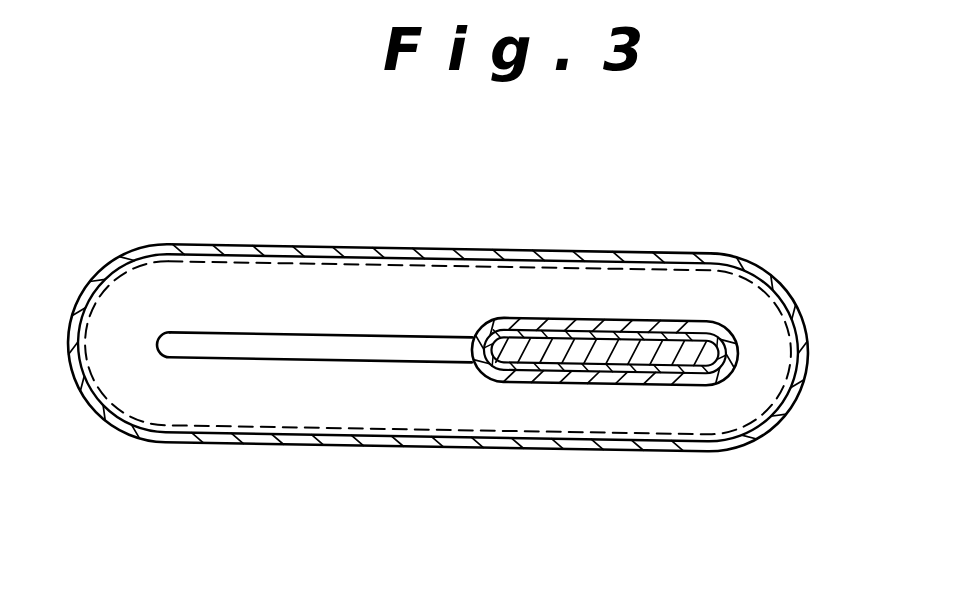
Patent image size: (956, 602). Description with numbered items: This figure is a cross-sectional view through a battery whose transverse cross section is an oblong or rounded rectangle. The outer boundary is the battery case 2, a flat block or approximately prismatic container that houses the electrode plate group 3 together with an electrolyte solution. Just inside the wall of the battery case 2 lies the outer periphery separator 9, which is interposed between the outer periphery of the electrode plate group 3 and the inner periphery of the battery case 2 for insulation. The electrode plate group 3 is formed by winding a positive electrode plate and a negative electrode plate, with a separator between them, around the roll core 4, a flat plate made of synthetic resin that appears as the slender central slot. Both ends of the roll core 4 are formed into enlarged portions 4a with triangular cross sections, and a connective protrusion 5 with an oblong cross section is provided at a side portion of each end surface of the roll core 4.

The battery case 2 is at (327, 247).
The outer periphery separator 9 is at (273, 257).
The electrode plate group 3 is at (260, 398).
The roll core 4 is at (358, 362).
The enlarged portions 4a is at (409, 350).
The connective protrusion 5 is at (593, 353).